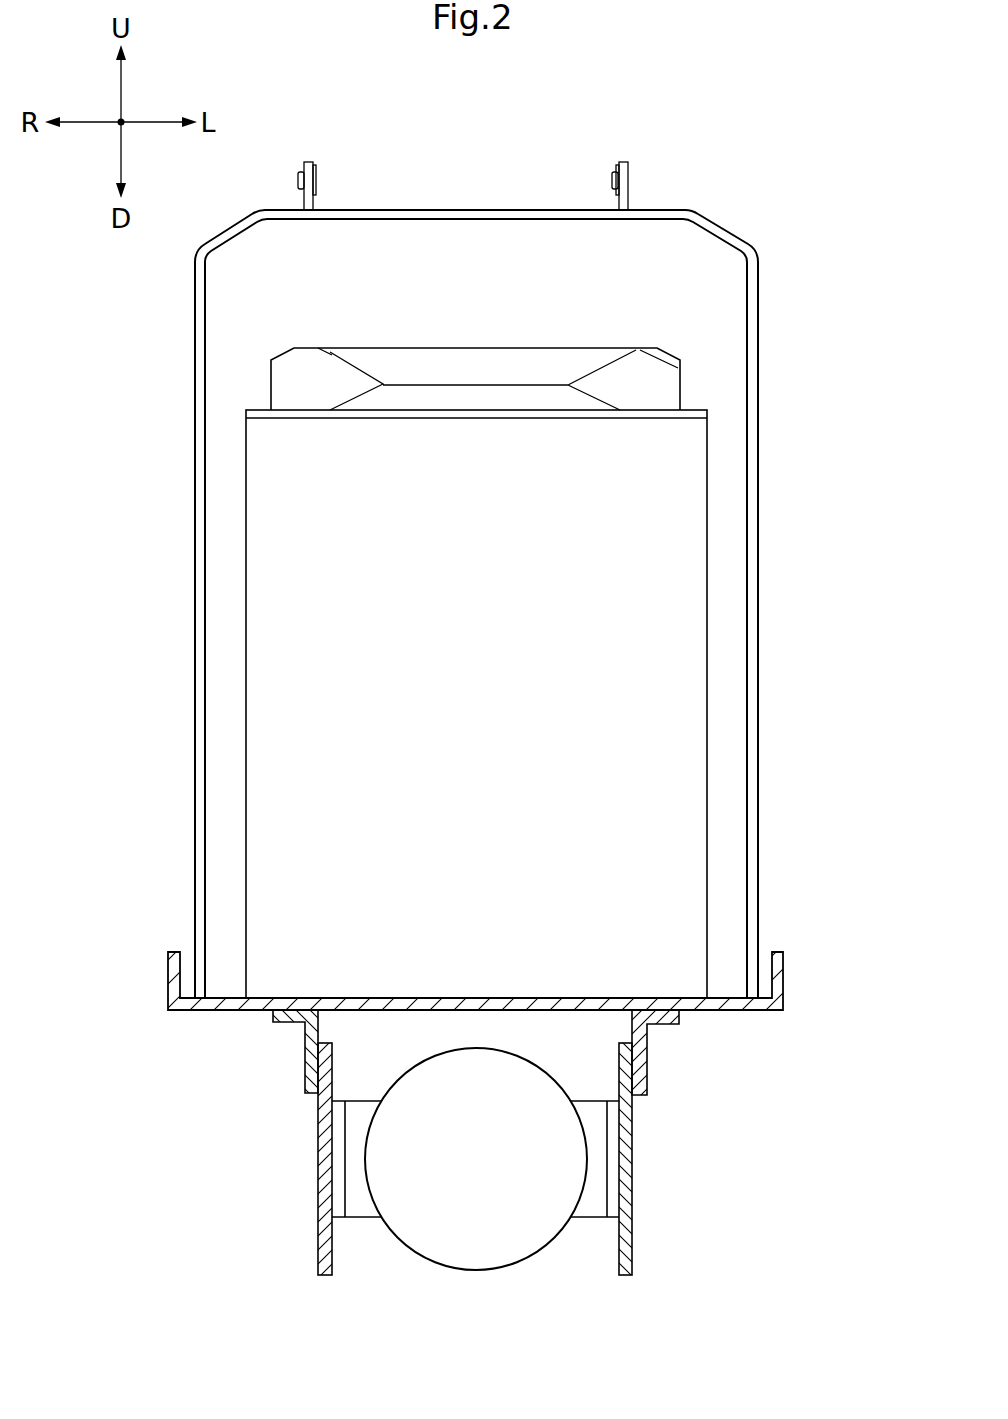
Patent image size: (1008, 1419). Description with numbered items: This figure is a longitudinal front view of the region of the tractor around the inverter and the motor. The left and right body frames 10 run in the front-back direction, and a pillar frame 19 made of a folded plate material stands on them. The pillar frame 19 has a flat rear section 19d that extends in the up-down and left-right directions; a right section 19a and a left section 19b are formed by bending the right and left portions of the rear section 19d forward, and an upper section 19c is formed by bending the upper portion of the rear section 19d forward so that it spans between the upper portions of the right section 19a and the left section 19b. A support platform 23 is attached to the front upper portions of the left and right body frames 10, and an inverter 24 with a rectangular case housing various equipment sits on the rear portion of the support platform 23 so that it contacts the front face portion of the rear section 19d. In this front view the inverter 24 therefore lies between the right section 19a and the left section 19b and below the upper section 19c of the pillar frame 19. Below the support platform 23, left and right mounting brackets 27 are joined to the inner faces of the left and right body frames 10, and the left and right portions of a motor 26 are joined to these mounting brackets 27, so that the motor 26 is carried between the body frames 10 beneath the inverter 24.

The pillar frame 19 is at (490, 547).
The right section 19a is at (195, 483).
The left section 19b is at (758, 483).
The upper section 19c is at (528, 210).
The rear section 19d is at (389, 240).
The inverter 24 is at (680, 738).
The support platform 23 is at (474, 998).
The body frames 10 is at (318, 1160).
The mounting brackets 27 is at (355, 1220).
The motor 26 is at (464, 1268).